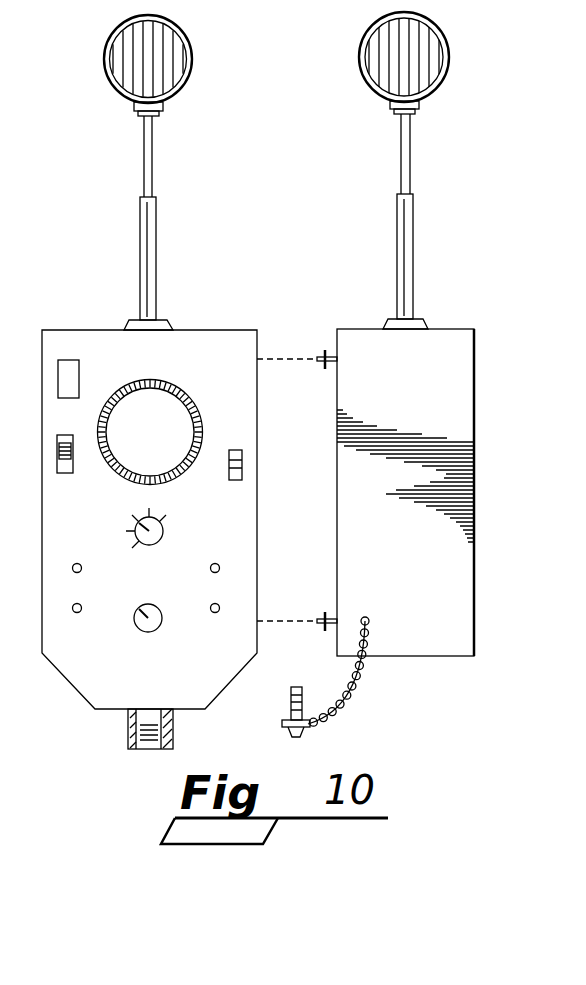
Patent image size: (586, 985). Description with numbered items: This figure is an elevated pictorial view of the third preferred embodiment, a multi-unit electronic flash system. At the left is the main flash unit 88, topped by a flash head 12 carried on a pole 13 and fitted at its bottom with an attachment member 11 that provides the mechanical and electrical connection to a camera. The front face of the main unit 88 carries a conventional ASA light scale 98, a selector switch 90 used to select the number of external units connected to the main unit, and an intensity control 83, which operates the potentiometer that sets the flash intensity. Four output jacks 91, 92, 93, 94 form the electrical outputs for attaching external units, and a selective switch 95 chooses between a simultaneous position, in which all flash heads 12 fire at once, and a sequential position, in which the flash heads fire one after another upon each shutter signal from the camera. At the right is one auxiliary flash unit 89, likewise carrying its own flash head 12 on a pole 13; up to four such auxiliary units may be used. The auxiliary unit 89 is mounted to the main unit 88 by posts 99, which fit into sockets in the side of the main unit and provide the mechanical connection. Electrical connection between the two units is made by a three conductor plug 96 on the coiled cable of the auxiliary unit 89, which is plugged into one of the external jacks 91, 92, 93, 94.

The attachment member 11 is at (120, 720).
The flash head 12 is at (183, 51).
The lamp pole 13 is at (166, 172).
The intensity control 83 is at (151, 596).
The main flash unit 88 is at (55, 322).
The auxiliary flash unit 89 is at (421, 648).
The selector switch 90 is at (154, 530).
The output jack 91 is at (68, 556).
The output jack 92 is at (210, 555).
The output jack 93 is at (64, 599).
The output jack 94 is at (211, 599).
The selective switch 95 is at (234, 463).
The three conductor plug 96 is at (277, 720).
The ASA light scale 98 is at (175, 383).
The post 99 is at (316, 343).